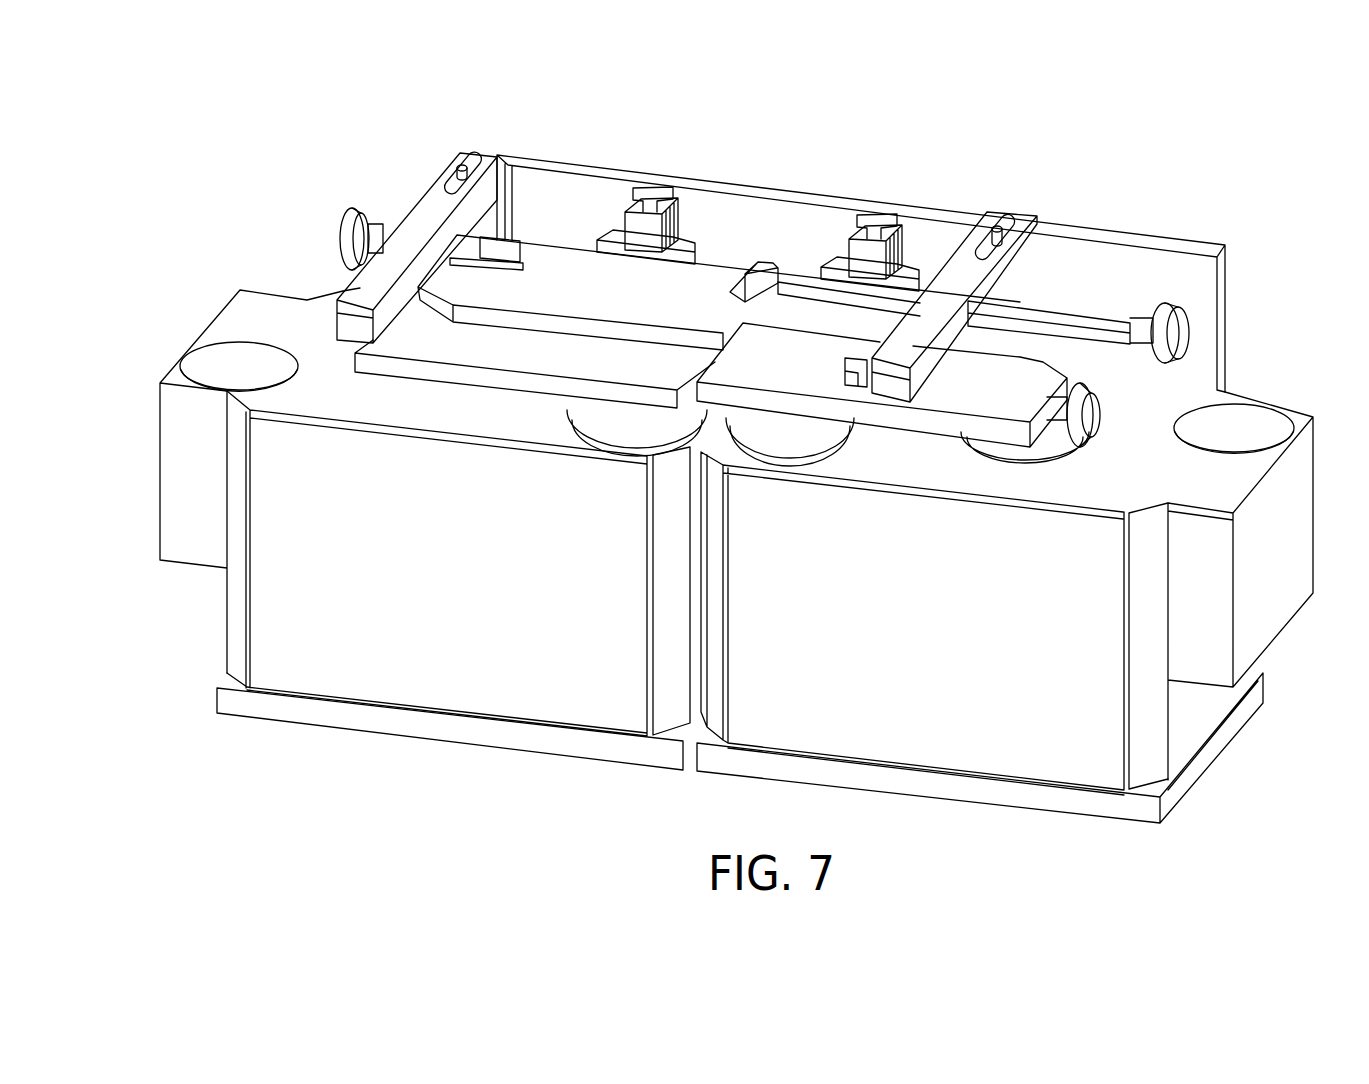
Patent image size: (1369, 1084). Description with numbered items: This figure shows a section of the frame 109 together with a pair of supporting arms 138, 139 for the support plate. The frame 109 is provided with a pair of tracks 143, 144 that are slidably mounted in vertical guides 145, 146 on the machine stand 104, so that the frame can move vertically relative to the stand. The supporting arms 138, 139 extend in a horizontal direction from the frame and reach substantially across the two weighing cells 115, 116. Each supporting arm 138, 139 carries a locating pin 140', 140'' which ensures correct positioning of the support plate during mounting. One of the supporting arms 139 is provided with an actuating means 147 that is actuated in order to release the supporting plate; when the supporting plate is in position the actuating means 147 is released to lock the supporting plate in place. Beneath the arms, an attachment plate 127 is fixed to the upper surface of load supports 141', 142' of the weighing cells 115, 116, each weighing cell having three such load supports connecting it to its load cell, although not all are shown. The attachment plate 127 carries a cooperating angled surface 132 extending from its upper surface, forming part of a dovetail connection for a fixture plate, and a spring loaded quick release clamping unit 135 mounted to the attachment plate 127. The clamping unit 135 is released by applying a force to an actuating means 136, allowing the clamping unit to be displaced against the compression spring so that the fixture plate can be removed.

The machine stand 104 is at (800, 200).
The frame 109 is at (488, 142).
The weighing cell 115 is at (461, 605).
The weighing cell 116 is at (941, 661).
The attachment plate 127 is at (930, 420).
The cooperating angled surface 132 is at (750, 437).
The quick release clamping unit 135 is at (863, 362).
The actuating means 136 is at (1100, 425).
The supporting arm 138 is at (427, 215).
The supporting arm 139 is at (970, 275).
The locating pin 140' is at (1050, 202).
The locating pin 140'' is at (423, 137).
The load support 141' is at (805, 638).
The load support 142' is at (535, 583).
The track 143 is at (688, 235).
The track 144 is at (905, 275).
The vertical guide 145 is at (653, 200).
The vertical guide 146 is at (882, 227).
The actuating means 147 is at (1180, 338).